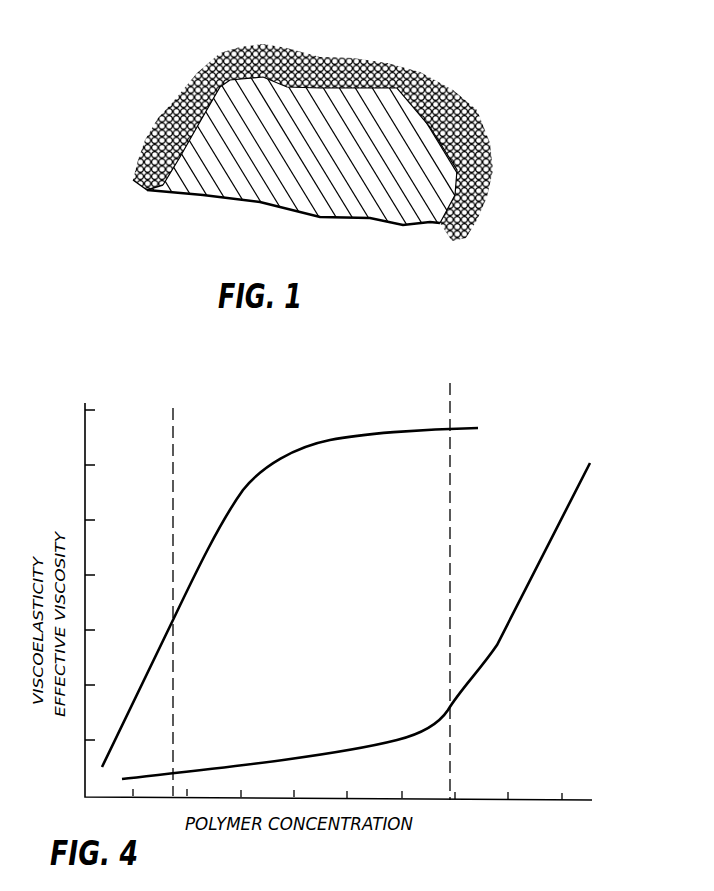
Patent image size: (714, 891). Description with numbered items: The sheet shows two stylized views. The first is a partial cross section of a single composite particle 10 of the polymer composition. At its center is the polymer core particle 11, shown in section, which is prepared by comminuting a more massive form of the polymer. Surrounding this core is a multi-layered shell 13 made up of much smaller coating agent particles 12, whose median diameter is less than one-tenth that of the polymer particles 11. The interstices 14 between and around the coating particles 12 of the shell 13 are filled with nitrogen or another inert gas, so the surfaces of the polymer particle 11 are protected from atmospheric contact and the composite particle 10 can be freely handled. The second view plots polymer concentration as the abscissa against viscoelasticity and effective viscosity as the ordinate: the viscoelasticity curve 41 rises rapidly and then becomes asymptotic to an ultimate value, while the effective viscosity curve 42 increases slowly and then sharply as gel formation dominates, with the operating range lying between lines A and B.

In FIG. 1, the composite particle 10 is at (310, 141).
In FIG. 1, the polymer core particle 11 is at (272, 183).
In FIG. 1, the coating agent particles 12 is at (183, 87).
In FIG. 1, the multi-layered shell 13 is at (437, 229).
In FIG. 1, the interstices 14 is at (163, 187).
In FIG. 4, the viscoelasticity curve 41 is at (215, 532).
In FIG. 4, the effective viscosity curve 42 is at (542, 556).